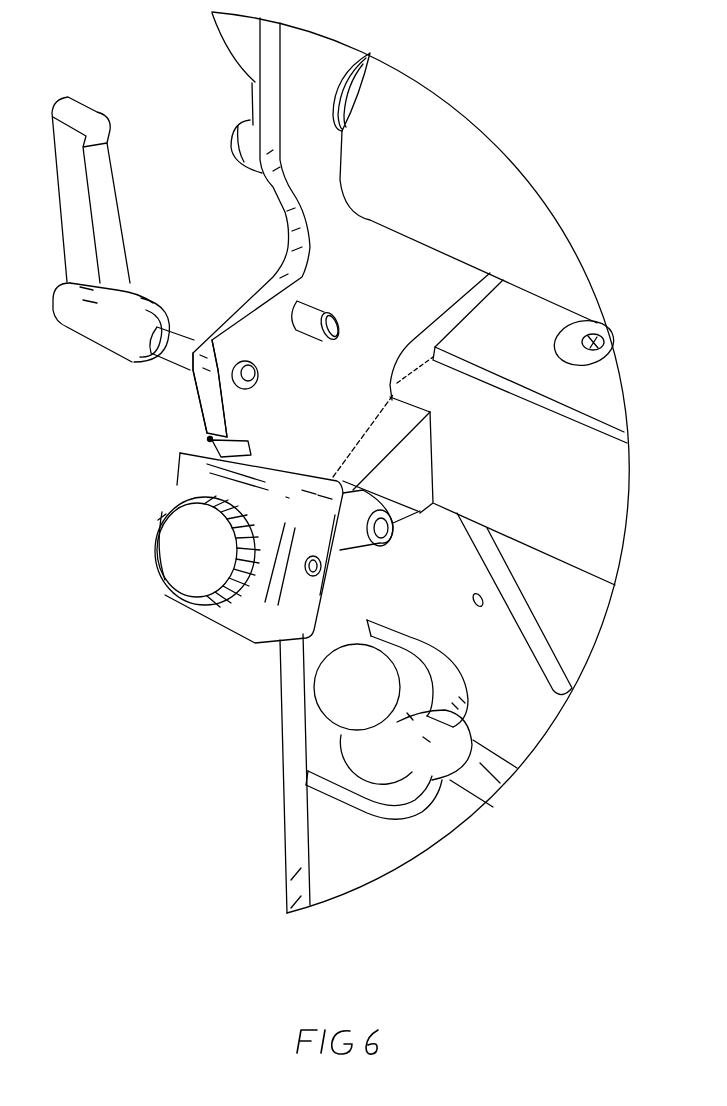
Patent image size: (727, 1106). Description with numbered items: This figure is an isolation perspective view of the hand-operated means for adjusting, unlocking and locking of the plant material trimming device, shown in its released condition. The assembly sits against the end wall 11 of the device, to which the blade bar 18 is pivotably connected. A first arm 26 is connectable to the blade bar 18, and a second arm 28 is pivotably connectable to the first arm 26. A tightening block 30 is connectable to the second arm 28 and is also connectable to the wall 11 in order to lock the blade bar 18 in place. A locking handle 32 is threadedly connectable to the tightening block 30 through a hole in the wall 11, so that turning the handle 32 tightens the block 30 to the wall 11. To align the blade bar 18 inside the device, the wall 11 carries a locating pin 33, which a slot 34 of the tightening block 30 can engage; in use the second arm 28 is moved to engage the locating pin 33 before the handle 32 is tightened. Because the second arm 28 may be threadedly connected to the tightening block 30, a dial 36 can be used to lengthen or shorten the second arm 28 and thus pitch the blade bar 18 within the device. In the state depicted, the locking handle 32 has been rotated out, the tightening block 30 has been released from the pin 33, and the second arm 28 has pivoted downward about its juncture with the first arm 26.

The wall 11 is at (406, 292).
The blade bar 18 is at (531, 452).
The first arm 26 is at (397, 450).
The second arm 28 is at (338, 540).
The tightening block 30 is at (243, 617).
The locking handle 32 is at (110, 230).
The locating pin 33 is at (316, 313).
The slot 34 is at (205, 437).
The dial 36 is at (172, 550).